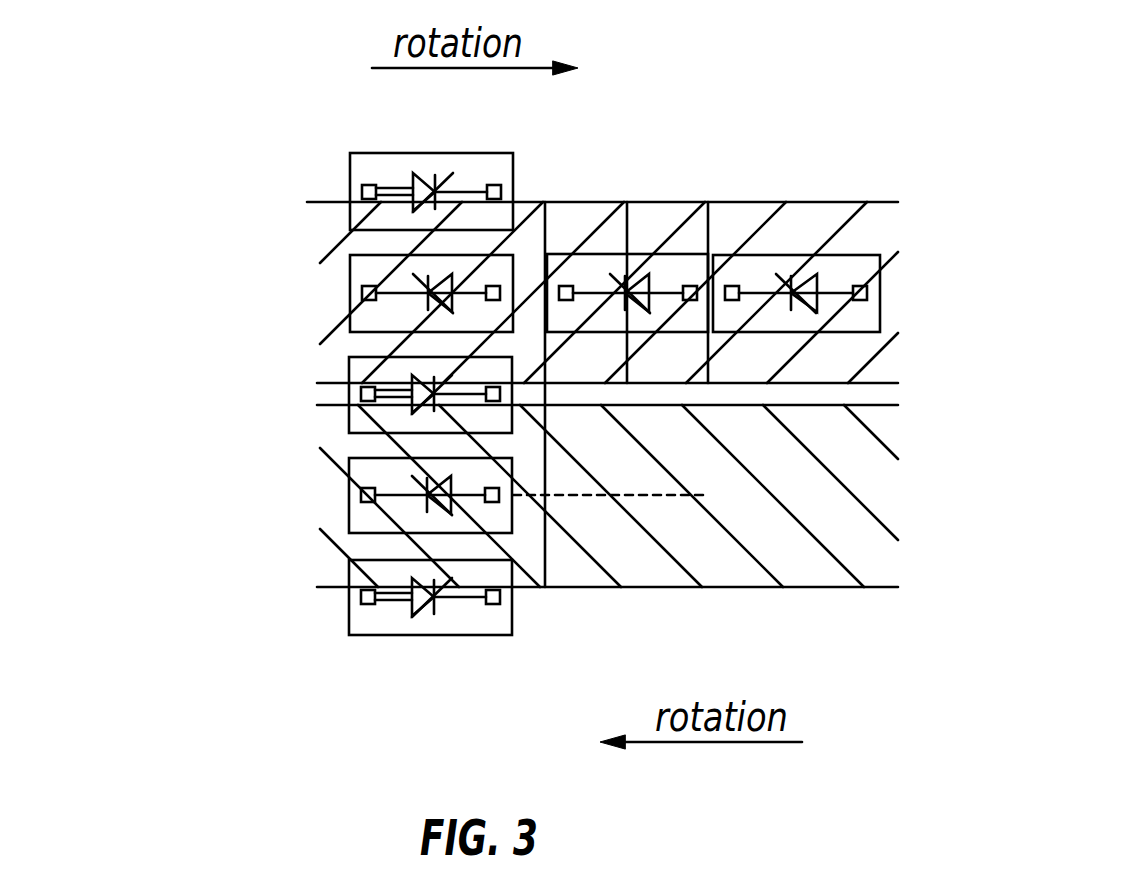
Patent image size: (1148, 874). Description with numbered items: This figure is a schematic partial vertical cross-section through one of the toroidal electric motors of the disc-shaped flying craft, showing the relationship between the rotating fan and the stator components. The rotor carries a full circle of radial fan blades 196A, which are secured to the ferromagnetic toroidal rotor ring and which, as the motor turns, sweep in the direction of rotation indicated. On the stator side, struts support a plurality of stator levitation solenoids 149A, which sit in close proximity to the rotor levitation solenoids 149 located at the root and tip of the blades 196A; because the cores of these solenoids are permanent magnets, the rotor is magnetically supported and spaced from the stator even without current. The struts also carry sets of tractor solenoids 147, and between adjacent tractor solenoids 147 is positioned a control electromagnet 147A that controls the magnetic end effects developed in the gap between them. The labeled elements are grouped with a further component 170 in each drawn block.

The control electromagnet 147A is at (365, 173).
The stator levitation solenoid 149A is at (362, 373).
The diode 170 is at (368, 620).
The tractor solenoid 147 is at (372, 272).
The rotor levitation solenoid 149 is at (372, 517).
The radial fan blade 196A is at (600, 223).